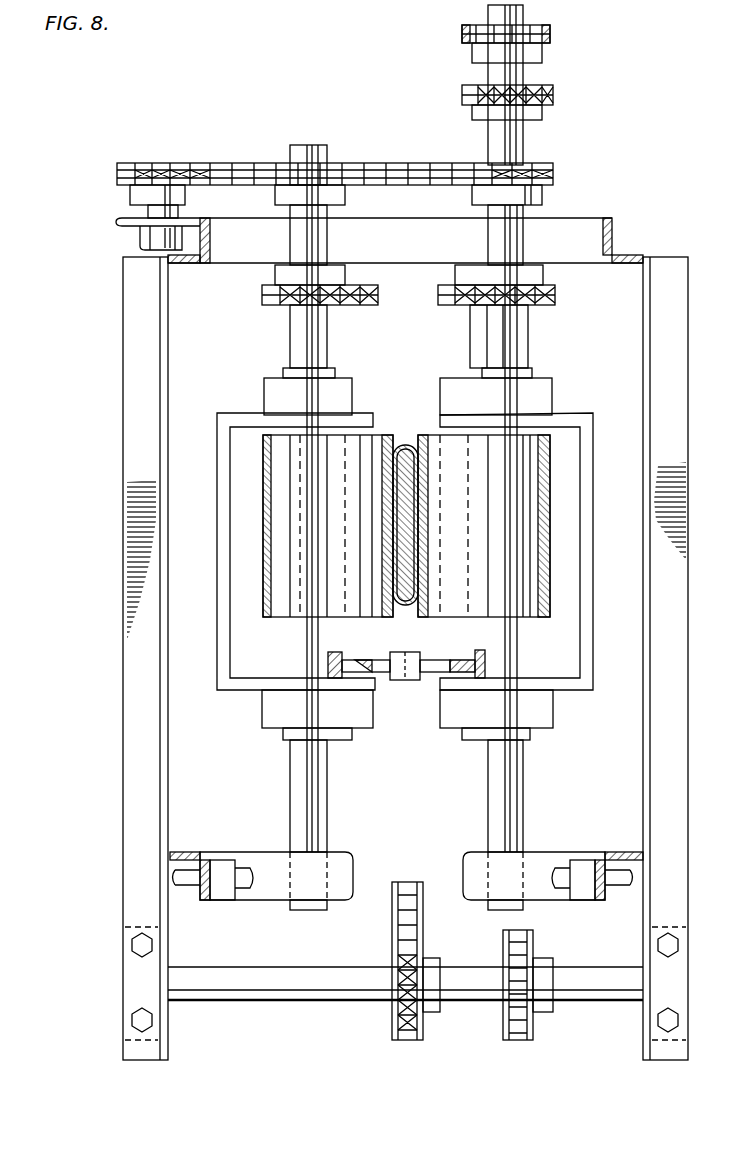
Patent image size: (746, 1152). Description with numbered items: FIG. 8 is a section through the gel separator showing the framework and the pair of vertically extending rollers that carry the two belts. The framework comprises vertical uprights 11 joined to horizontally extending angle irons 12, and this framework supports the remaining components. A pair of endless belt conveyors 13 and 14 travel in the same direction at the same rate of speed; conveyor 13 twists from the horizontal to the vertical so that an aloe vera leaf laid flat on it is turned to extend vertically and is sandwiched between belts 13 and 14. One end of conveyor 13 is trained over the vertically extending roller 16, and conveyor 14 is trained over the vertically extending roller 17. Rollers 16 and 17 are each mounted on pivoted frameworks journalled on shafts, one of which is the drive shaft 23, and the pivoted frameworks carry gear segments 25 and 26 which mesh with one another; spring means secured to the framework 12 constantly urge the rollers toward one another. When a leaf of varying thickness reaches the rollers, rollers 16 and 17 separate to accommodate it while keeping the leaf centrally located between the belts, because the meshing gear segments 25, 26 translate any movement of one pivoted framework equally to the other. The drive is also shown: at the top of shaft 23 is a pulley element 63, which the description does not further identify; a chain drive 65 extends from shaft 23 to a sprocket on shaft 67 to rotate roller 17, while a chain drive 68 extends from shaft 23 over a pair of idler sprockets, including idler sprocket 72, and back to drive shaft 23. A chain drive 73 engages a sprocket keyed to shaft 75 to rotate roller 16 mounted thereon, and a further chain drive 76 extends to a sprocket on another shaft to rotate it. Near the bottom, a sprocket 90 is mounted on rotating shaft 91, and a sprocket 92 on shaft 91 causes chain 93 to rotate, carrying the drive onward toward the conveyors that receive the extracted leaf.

The vertical uprights 11 is at (138, 660).
The angle irons 12 is at (614, 232).
The endless belt conveyor 13 is at (393, 430).
The endless belt conveyor 14 is at (411, 445).
The vertically extending roller 16 is at (366, 560).
The vertically extending roller 17 is at (458, 560).
The drive shaft 23 is at (522, 143).
The gear segment 25 is at (432, 660).
The gear segment 26 is at (358, 660).
The drive pulley 63 is at (550, 28).
The chain drive 65 is at (455, 306).
The shaft 67 is at (295, 342).
The chain drive 68 is at (426, 164).
The idler sprocket 72 is at (158, 162).
The chain drive 73 is at (364, 306).
The shaft 75 is at (520, 340).
The chain drive 76 is at (555, 96).
The sprocket 90 is at (533, 1017).
The rotating shaft 91 is at (594, 968).
The sprocket 92 is at (405, 1035).
The chain 93 is at (424, 896).